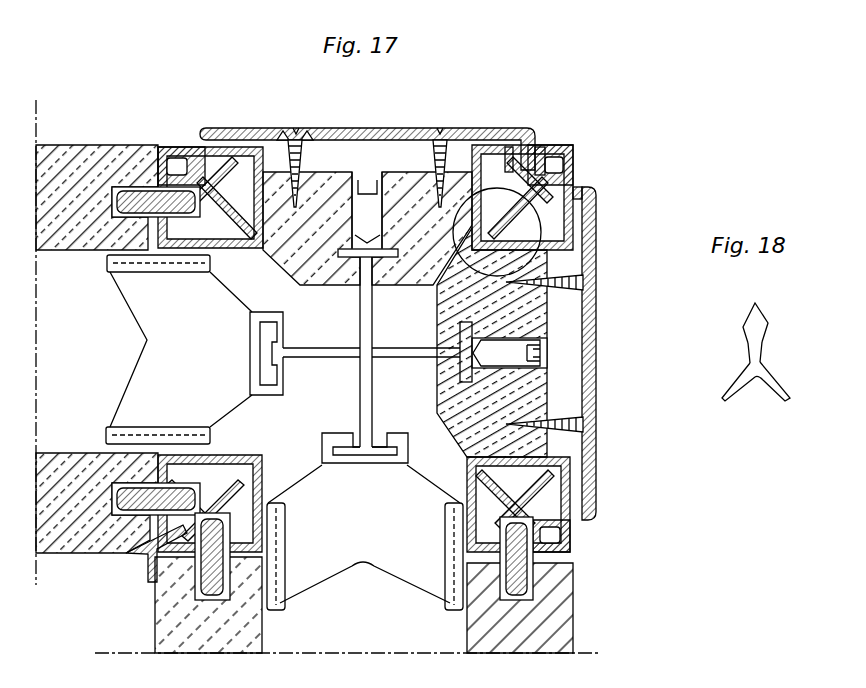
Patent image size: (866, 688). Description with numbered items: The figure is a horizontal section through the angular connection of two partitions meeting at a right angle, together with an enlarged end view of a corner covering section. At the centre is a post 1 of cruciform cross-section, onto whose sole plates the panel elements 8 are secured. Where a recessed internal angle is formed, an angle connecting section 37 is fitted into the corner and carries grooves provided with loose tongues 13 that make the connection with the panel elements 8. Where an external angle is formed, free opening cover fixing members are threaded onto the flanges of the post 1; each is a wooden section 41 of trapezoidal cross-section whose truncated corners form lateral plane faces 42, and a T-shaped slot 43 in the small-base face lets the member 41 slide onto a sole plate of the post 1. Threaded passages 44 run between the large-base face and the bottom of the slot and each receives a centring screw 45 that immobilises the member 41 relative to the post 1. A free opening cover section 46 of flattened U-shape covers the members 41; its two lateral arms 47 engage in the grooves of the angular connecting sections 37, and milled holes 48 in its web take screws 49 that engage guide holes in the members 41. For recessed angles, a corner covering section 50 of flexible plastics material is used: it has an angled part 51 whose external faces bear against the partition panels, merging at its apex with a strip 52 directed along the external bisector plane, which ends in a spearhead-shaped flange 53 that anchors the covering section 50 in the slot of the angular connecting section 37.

In FIG. 17, the post 1 is at (353, 353).
In FIG. 17, the panel element 8 is at (99, 145).
In FIG. 17, the loose tongue 13 is at (147, 197).
In FIG. 17, the angle connecting section 37 is at (238, 147).
In FIG. 17, the wooden section 41 is at (465, 227).
In FIG. 17, the lateral plane face 42 is at (283, 133).
In FIG. 17, the T-shaped slot 43 is at (333, 258).
In FIG. 17, the threaded passage 44 is at (520, 373).
In FIG. 17, the centring screw 45 is at (525, 343).
In FIG. 17, the free opening cover section 46 is at (401, 130).
In FIG. 17, the lateral arm 47 is at (522, 166).
In FIG. 17, the milled hole 48 is at (308, 138).
In FIG. 17, the screw 49 is at (303, 133).
In FIG. 17, the corner covering section 50 is at (143, 575).
In FIG. 18, the corner covering section 50 is at (760, 368).
In FIG. 18, the angled part 51 is at (747, 387).
In FIG. 18, the strip 52 is at (753, 348).
In FIG. 18, the flange 53 is at (765, 316).